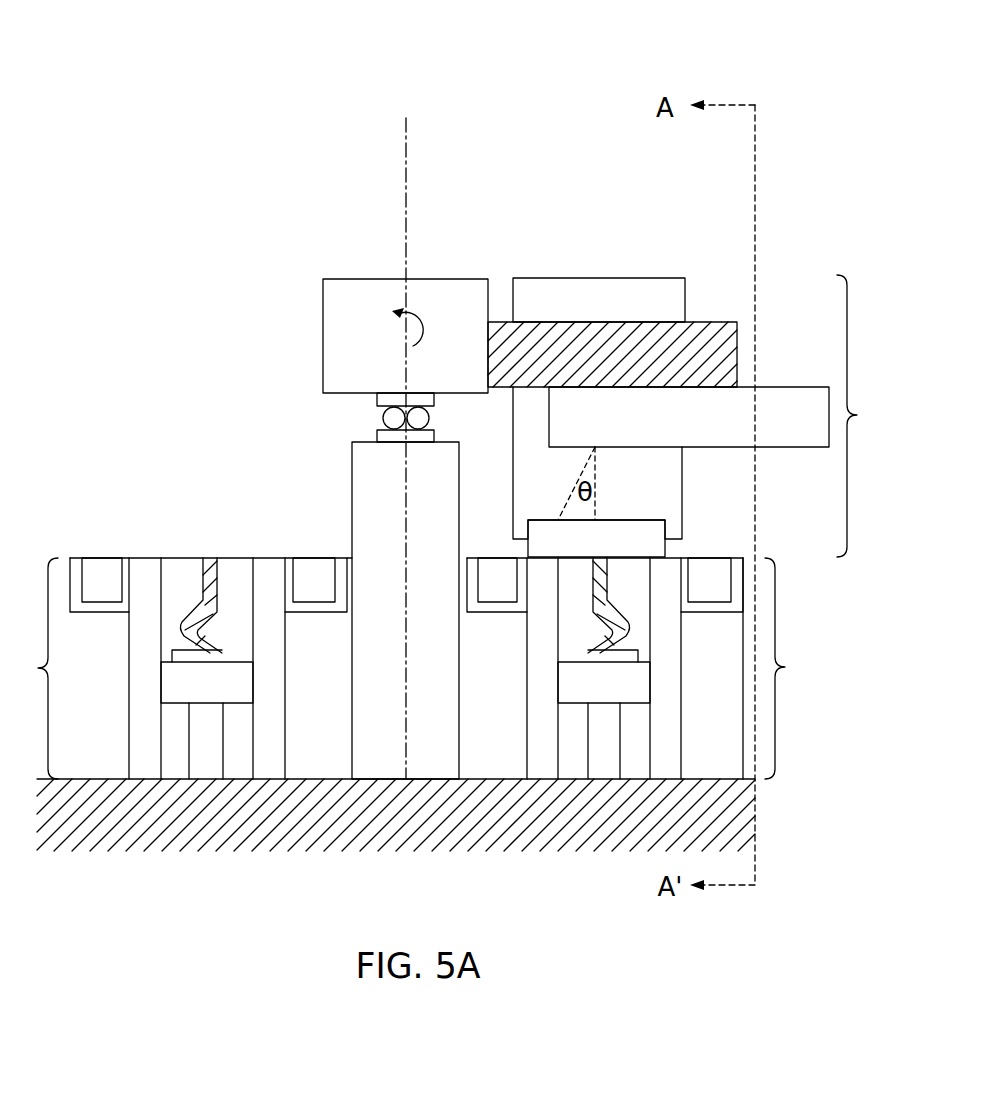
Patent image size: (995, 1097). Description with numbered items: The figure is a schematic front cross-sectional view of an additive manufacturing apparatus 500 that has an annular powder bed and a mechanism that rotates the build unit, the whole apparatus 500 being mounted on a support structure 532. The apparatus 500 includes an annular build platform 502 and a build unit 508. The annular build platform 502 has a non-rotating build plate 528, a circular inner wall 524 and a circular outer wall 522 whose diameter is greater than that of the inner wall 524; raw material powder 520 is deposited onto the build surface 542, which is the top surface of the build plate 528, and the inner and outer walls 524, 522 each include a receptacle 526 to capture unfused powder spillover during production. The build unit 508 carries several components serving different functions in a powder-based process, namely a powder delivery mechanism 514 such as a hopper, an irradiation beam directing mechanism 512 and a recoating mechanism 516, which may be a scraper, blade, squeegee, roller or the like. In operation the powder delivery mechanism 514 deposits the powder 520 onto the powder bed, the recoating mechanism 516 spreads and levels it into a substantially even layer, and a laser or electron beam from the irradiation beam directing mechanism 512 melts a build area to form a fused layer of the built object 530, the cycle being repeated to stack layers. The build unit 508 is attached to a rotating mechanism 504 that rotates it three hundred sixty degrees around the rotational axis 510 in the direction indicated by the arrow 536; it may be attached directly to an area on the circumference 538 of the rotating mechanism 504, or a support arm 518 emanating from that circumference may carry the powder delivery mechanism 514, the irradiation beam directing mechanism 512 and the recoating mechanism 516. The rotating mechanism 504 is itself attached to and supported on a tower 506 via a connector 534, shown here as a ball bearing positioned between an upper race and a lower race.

The additive manufacturing apparatus 500 is at (219, 82).
The annular build platform 502 is at (416, 668).
The rotating mechanism 504 is at (322, 347).
The tower 506 is at (352, 465).
The build unit 508 is at (866, 416).
The rotational axis 510 is at (400, 128).
The irradiation beam directing mechanism 512 is at (788, 387).
The powder delivery mechanism 514 is at (636, 278).
The recoating mechanism 516 is at (634, 520).
The support arm 518 is at (735, 322).
The raw material powder 520 is at (175, 568).
The circular outer wall 522 is at (129, 722).
The circular inner wall 524 is at (290, 742).
The receptacle 526 is at (100, 572).
The non-rotating build plate 528 is at (172, 677).
The built object 530 is at (210, 560).
The support structure 532 is at (72, 852).
The connector 534 is at (377, 418).
The arrow 536 is at (413, 346).
The circumference of the rotating mechanism 538 is at (316, 298).
The build surface 542 is at (233, 640).